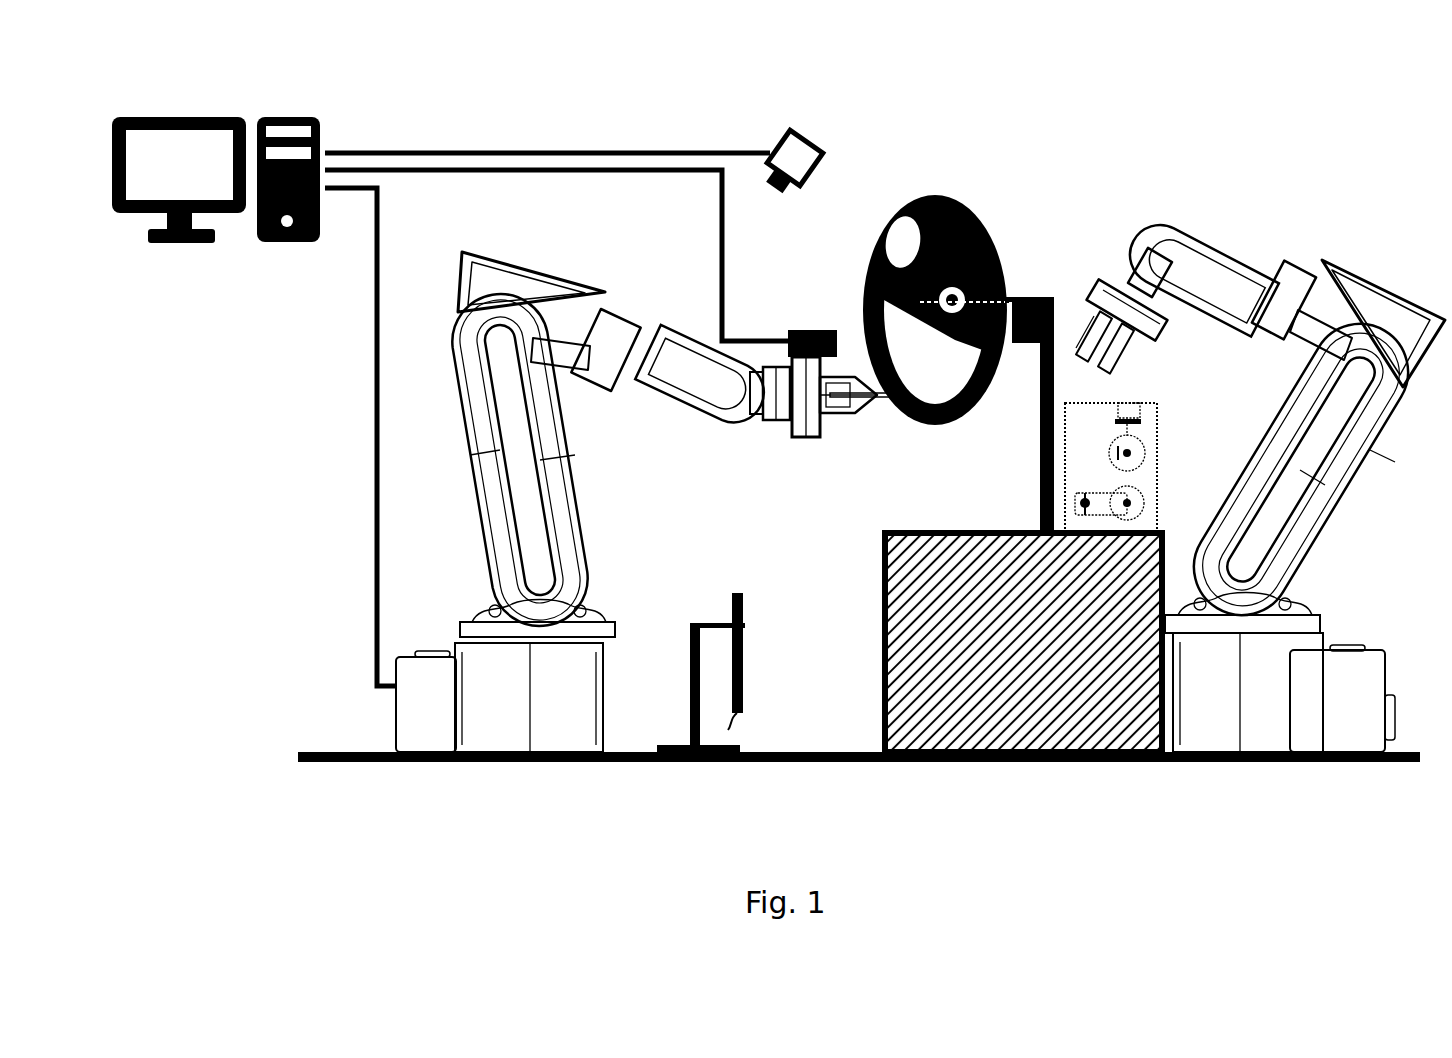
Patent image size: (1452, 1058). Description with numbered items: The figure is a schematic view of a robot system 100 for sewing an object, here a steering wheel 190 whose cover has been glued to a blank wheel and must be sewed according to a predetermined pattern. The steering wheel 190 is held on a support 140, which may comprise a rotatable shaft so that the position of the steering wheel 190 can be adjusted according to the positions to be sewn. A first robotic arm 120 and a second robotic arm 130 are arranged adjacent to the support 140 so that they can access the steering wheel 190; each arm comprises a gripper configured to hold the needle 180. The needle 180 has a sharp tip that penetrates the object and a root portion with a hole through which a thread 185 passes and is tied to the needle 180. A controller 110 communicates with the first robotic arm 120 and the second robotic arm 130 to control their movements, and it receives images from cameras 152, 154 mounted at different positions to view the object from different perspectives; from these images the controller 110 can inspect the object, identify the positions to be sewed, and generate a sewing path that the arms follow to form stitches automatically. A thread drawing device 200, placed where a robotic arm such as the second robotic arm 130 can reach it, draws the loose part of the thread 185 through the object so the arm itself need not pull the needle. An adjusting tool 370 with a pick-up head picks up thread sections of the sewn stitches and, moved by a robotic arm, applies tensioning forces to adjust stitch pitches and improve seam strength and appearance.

The robot system 100 is at (1216, 114).
The controller 110 is at (268, 86).
The first robotic arm 120 is at (749, 440).
The second robotic arm 130 is at (1182, 344).
The support 140 is at (1040, 293).
The camera 152 is at (807, 136).
The camera 154 is at (808, 338).
The needle 180 is at (912, 398).
The thread 185 is at (823, 420).
The steering wheel 190 is at (986, 216).
The thread drawing device 200 is at (1158, 449).
The adjusting tool 370 is at (751, 658).